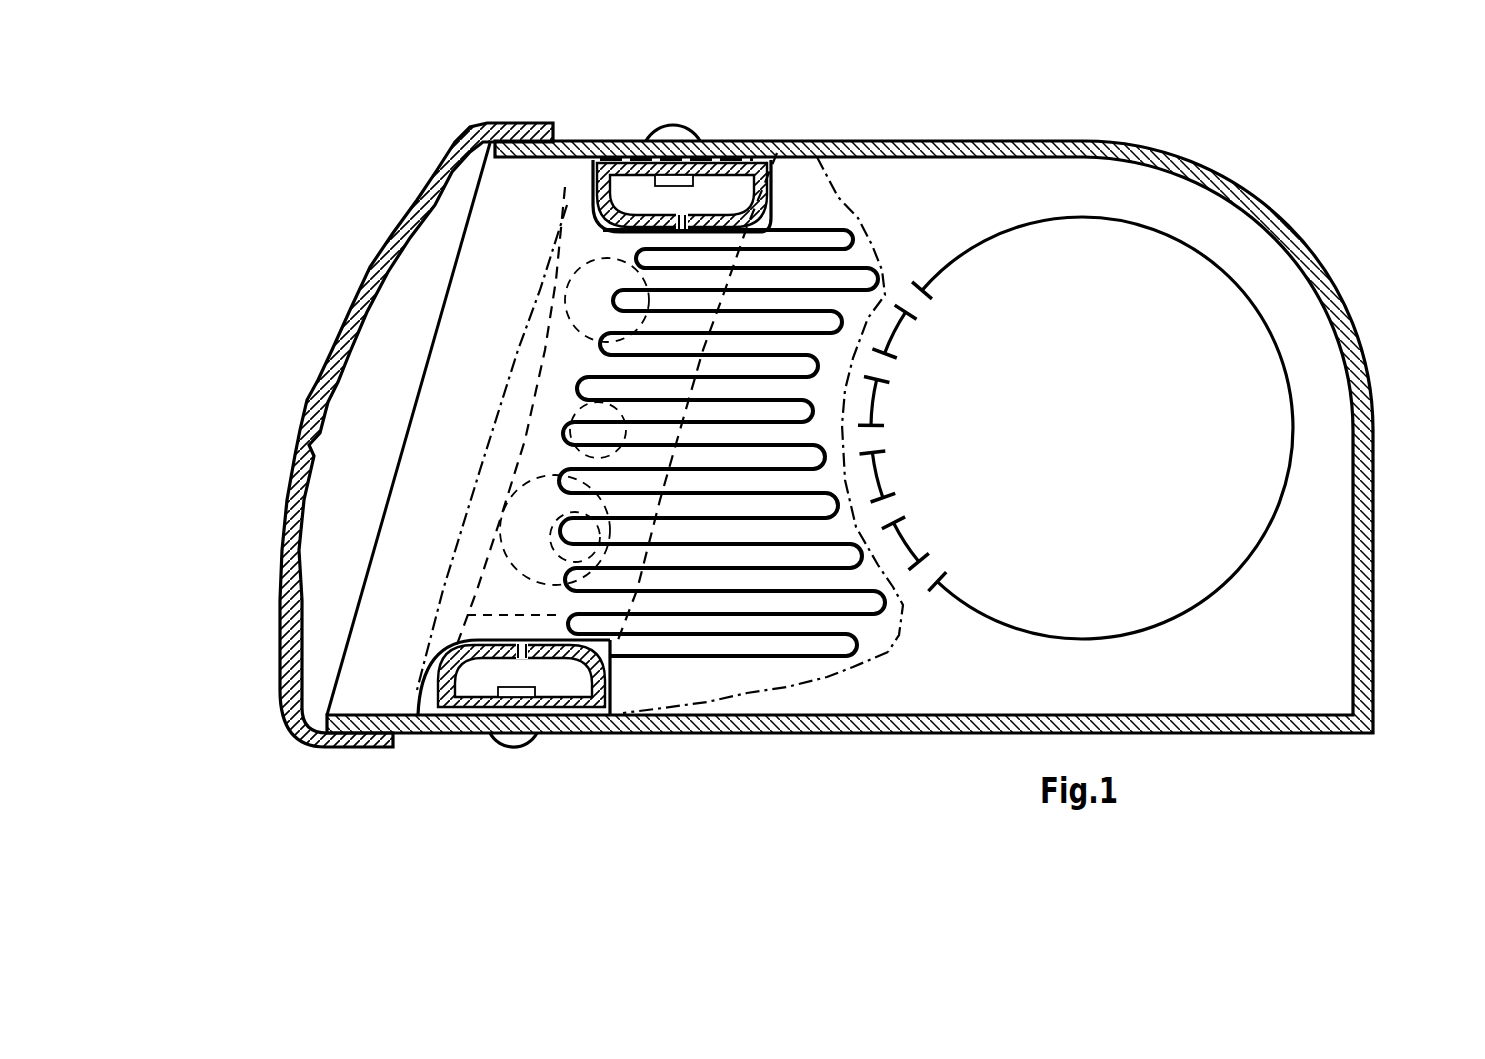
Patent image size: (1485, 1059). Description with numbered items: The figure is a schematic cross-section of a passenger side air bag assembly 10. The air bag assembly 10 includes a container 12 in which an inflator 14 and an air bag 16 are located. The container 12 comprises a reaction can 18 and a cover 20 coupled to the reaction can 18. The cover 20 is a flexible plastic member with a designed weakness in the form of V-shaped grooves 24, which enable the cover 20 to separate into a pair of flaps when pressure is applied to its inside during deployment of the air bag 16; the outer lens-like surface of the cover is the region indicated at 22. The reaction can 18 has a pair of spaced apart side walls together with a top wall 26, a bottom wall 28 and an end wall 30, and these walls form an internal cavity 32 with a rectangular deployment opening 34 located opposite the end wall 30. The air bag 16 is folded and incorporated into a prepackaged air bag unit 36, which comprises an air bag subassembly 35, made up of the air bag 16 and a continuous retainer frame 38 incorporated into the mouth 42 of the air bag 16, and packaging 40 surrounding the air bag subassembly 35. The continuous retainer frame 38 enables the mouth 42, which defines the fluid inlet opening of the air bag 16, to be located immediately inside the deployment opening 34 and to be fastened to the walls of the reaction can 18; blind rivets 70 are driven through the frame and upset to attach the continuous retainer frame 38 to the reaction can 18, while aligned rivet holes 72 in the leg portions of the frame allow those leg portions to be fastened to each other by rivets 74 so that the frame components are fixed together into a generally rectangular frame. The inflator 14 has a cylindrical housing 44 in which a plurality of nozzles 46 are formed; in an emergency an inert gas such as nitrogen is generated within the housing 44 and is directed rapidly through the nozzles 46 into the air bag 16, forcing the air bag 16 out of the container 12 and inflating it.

The air bag assembly 10 is at (394, 155).
The container 12 is at (561, 115).
The inflator 14 is at (1186, 219).
The air bag 16 is at (812, 223).
The reaction can 18 is at (913, 129).
The cover 20 is at (357, 272).
The lens outer surface 22 is at (328, 366).
The V-shaped grooves 24 is at (320, 446).
The top wall 26 is at (583, 140).
The bottom wall 28 is at (418, 748).
The end wall 30 is at (1373, 420).
The internal cavity 32 is at (794, 696).
The deployment opening 34 is at (322, 688).
The air bag subassembly 35 is at (629, 664).
The prepackaged air bag unit 36 is at (870, 672).
The continuous retainer frame 38 is at (774, 201).
The packaging 40 is at (866, 657).
The mouth 42 is at (567, 180).
The cylindrical housing 44 is at (1232, 283).
The nozzles 46 is at (940, 545).
The blind rivets 70 is at (690, 128).
The rivet holes 72 is at (581, 655).
The rivets 74 is at (684, 582).